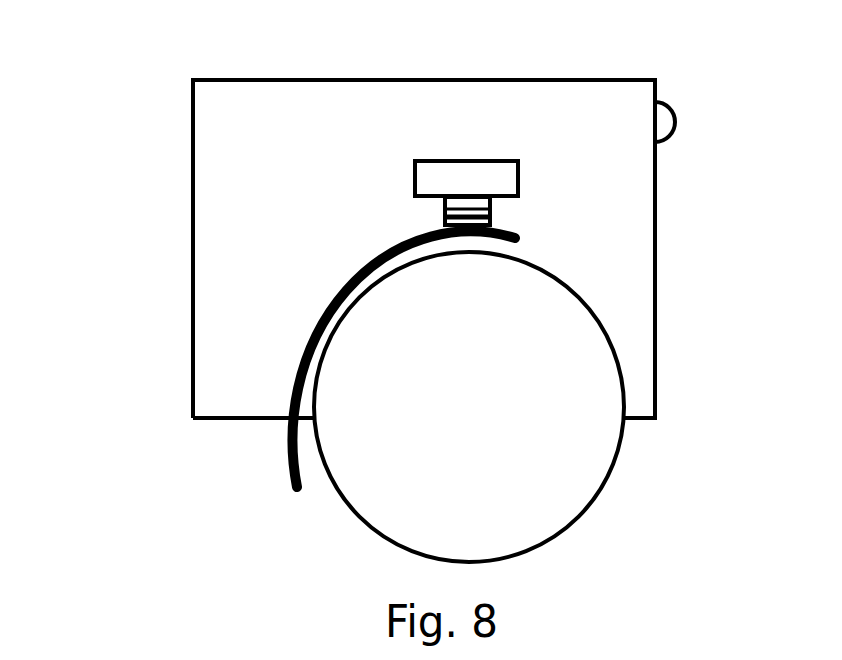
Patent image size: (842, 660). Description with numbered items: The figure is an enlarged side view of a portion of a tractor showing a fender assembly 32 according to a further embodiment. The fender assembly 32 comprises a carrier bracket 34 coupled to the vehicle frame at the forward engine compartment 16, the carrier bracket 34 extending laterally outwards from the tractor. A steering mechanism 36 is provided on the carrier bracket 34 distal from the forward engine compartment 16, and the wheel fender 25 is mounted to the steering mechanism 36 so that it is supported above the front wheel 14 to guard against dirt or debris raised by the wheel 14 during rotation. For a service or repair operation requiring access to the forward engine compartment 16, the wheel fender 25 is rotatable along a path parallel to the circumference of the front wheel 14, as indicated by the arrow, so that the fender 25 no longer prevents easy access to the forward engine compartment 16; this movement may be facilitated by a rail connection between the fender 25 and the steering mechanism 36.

The fender assembly 32 is at (152, 110).
The forward engine compartment 16 is at (632, 260).
The carrier bracket 34 is at (487, 175).
The steering mechanism 36 is at (445, 208).
The wheel fender 25 is at (297, 347).
The front wheel 14 is at (404, 500).